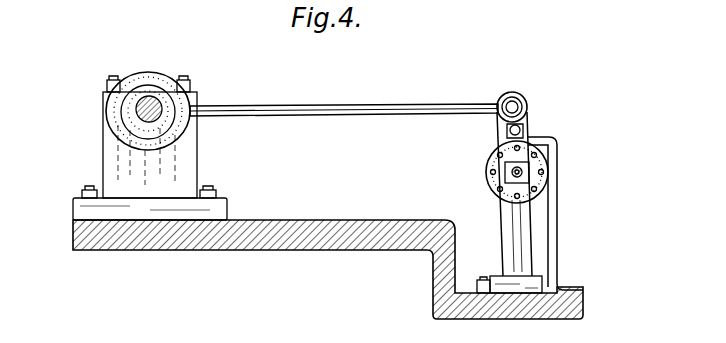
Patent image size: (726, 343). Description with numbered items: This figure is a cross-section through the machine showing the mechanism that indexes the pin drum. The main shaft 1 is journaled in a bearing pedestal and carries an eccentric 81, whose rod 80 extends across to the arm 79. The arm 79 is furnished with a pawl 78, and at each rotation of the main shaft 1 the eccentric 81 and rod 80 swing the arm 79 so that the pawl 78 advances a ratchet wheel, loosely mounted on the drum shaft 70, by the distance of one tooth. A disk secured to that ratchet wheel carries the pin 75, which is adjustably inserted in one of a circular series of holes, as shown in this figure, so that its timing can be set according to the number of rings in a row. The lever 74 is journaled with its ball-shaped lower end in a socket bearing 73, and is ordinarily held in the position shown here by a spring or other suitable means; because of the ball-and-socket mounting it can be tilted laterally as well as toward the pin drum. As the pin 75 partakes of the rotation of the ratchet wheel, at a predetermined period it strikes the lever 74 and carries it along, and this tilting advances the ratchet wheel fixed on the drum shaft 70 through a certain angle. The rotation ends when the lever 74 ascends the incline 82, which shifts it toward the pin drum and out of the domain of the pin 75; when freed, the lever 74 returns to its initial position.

The main shaft 1 is at (149, 100).
The eccentric 81 is at (106, 120).
The rod 80 is at (385, 104).
The arm 79 is at (515, 96).
The pawl 78 is at (524, 133).
The incline 82 is at (553, 139).
The lever 74 is at (493, 163).
The drum shaft 70 is at (531, 172).
The pin 75 is at (508, 200).
The socket bearing 73 is at (504, 277).